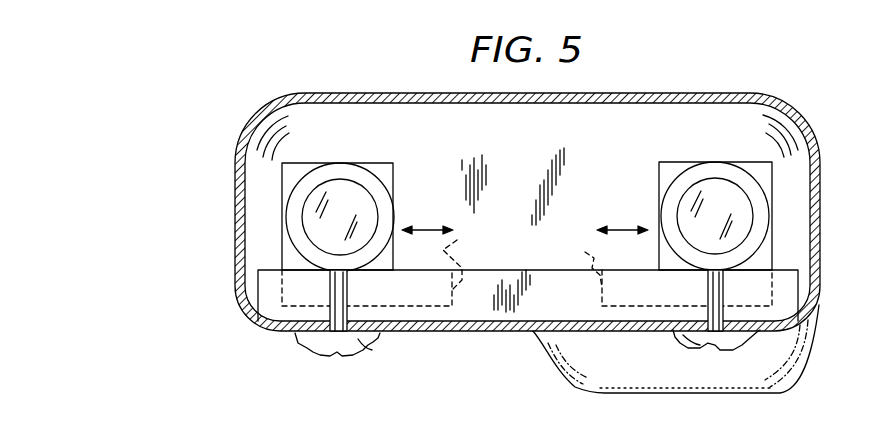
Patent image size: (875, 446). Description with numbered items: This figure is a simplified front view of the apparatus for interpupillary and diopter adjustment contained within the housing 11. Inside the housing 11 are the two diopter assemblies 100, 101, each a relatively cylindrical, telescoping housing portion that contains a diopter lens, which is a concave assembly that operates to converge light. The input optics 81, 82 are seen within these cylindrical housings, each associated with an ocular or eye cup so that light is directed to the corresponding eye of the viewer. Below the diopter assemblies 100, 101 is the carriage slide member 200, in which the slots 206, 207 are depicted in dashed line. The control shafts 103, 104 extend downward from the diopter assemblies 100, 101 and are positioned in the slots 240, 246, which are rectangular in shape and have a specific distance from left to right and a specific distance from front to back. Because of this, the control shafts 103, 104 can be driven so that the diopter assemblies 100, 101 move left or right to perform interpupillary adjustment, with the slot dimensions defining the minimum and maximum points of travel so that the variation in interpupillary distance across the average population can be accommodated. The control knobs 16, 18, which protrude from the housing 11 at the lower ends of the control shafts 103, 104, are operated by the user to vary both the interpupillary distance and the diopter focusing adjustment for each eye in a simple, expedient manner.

The housing 11 is at (246, 152).
The diopter assembly 100 is at (326, 164).
The diopter assembly 101 is at (706, 161).
The input optics 81 is at (363, 212).
The input optics 82 is at (682, 205).
The slot 207 is at (472, 258).
The slot 206 is at (577, 262).
The control shaft 103 is at (345, 287).
The control shaft 104 is at (708, 285).
The carriage slide member 200 is at (797, 254).
The control knob 16 is at (304, 342).
The slot 246 is at (372, 344).
The control knob 18 is at (745, 345).
The slot 240 is at (694, 344).